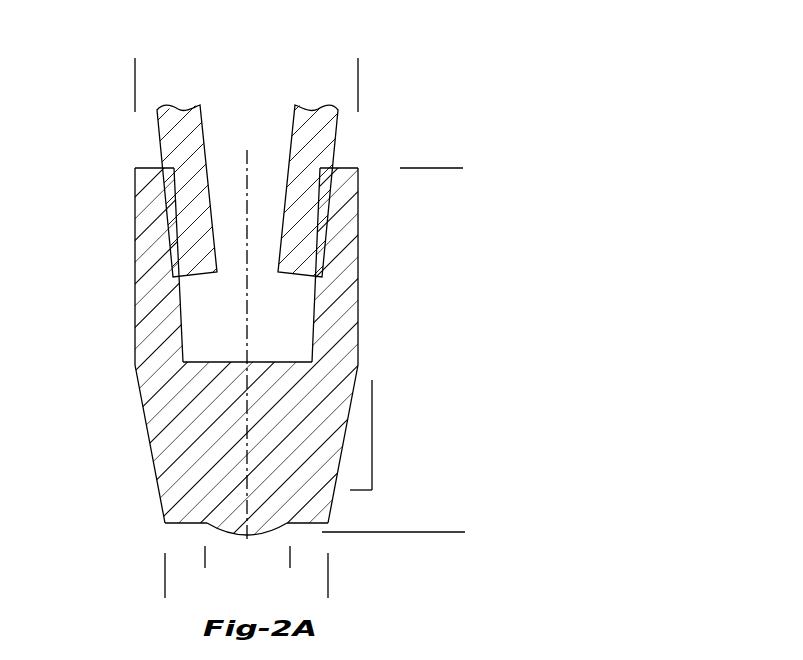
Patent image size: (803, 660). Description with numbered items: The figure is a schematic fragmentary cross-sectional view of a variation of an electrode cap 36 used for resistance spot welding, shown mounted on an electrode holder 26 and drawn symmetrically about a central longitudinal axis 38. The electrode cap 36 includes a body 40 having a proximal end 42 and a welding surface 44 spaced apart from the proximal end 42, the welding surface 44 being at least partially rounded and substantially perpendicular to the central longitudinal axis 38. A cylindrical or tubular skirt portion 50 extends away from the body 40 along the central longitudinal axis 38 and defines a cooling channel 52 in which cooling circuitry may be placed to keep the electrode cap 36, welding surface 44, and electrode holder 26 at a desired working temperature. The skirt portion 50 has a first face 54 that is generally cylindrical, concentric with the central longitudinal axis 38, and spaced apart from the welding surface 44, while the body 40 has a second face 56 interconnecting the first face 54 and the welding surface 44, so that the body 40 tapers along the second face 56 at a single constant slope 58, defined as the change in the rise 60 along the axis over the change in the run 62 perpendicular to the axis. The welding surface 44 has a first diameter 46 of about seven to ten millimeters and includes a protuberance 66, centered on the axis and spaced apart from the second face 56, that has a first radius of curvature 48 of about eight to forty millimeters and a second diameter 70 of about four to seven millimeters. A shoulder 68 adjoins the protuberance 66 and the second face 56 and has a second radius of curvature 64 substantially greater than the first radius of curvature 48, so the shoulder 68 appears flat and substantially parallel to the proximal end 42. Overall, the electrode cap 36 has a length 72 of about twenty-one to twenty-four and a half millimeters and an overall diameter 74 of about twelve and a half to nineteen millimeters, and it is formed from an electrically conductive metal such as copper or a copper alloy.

The electrode holder 26 is at (160, 150).
The electrode cap 36 is at (414, 153).
The central longitudinal axis 38 is at (247, 285).
The body 40 is at (119, 457).
The proximal end 42 is at (274, 361).
The welding surface 44 is at (180, 522).
The first diameter 46 is at (166, 580).
The first radius of curvature 48 is at (250, 531).
The skirt portion 50 is at (397, 330).
The cooling channel 52 is at (268, 165).
The first face 54 is at (358, 213).
The second face 56 is at (358, 378).
The slope 58 is at (375, 417).
The rise 60 is at (372, 432).
The run 62 is at (360, 493).
The second radius of curvature 64 is at (316, 521).
The protuberance 66 is at (207, 529).
The shoulder 68 is at (305, 528).
The second diameter 70 is at (289, 557).
The length 72 is at (447, 169).
The overall diameter 74 is at (136, 72).